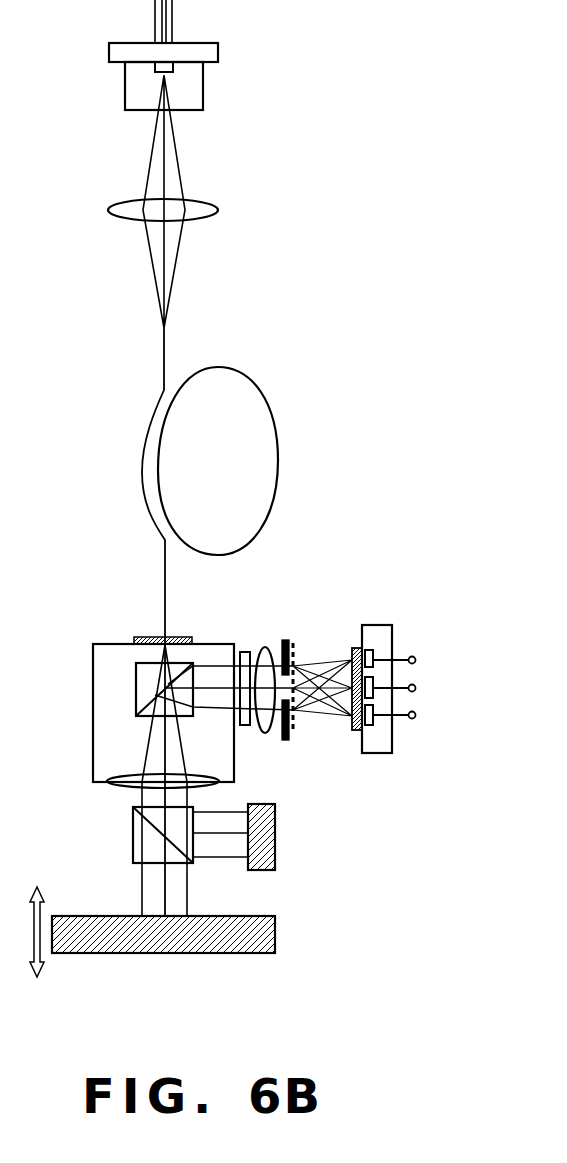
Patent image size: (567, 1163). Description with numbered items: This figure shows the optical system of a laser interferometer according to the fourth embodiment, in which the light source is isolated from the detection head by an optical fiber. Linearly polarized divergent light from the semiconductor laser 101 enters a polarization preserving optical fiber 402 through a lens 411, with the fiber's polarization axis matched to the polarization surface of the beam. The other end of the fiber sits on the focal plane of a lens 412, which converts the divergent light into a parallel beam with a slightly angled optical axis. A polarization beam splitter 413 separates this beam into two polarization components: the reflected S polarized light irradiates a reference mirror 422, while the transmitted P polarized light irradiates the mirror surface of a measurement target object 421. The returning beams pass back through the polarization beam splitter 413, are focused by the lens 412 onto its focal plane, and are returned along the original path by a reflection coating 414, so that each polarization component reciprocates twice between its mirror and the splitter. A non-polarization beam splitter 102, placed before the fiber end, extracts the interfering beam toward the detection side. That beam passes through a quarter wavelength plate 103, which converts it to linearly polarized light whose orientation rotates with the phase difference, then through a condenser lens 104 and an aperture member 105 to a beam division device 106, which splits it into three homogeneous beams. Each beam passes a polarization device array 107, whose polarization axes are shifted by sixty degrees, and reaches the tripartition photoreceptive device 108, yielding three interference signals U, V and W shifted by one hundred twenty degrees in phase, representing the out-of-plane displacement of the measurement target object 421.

The semiconductor laser 101 is at (218, 52).
The lens 411 is at (220, 182).
The polarization preserving optical fiber 402 is at (219, 366).
The reflection coating 414 is at (150, 637).
The non-polarization beam splitter 102 is at (136, 683).
The lens 412 is at (118, 780).
The quarter wavelength plate 103 is at (241, 652).
The condenser lens 104 is at (262, 646).
The aperture member 105 is at (284, 640).
The beam division device 106 is at (293, 643).
The polarization device array 107 is at (352, 652).
The tripartition photoreceptive device 108 is at (372, 625).
The polarization beam splitter 413 is at (133, 833).
The reference mirror 422 is at (275, 833).
The measurement target object 421 is at (240, 953).